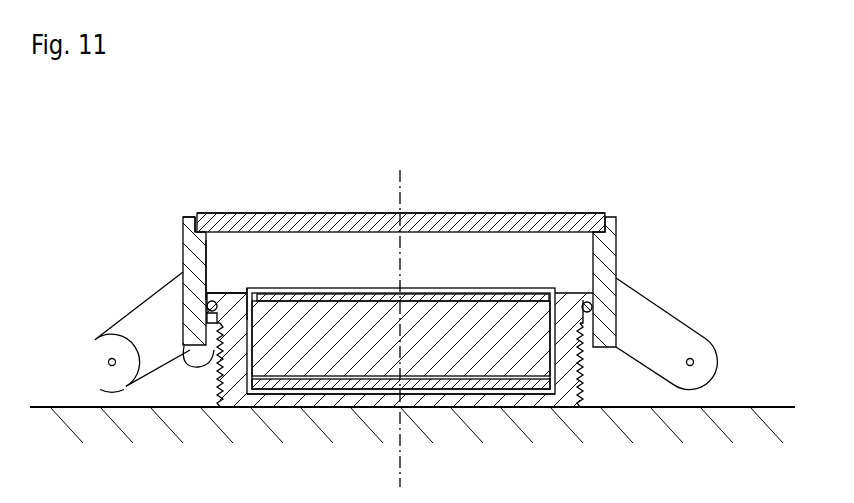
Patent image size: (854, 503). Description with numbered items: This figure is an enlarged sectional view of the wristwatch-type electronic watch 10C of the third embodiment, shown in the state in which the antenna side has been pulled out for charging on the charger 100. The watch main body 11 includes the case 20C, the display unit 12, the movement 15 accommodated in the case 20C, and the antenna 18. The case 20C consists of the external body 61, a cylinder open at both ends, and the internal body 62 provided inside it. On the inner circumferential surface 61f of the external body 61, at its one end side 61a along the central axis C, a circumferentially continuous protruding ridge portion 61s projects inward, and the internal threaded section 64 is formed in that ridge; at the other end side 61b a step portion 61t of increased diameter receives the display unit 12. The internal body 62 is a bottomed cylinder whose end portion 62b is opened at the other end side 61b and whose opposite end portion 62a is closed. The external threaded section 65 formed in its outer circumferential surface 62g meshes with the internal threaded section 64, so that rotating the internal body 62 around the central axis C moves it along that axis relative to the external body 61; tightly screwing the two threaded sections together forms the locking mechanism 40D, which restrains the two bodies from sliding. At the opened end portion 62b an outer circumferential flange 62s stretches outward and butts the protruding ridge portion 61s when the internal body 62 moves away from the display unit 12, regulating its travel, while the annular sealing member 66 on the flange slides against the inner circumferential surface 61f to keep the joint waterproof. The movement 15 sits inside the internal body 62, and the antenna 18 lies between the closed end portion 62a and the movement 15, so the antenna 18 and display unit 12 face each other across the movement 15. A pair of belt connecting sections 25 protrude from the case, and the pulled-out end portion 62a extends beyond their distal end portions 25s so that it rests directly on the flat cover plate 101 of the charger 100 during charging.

The wristwatch-type electronic watch 10C is at (594, 156).
The watch main body 11 is at (401, 171).
The display unit 12 is at (437, 214).
The movement 15 is at (347, 317).
The antenna 18 is at (429, 394).
The case 20C is at (626, 227).
The belt connecting section 25 is at (375, 376).
The distal end portion 25s is at (110, 391).
The locking mechanism 40D is at (596, 365).
The external body 61 is at (132, 247).
The one end side 61a is at (208, 318).
The other end side 61b is at (189, 216).
The inner circumferential surface 61f is at (206, 268).
The protruding ridge portion 61s is at (197, 356).
The step portion 61t is at (197, 216).
The internal body 62 is at (404, 314).
The end portion 62a is at (370, 390).
The end portion 62b is at (258, 300).
The outer circumferential surface 62g is at (205, 408).
The outer circumferential flange 62s is at (226, 292).
The internal threaded section 64 is at (401, 328).
The external threaded section 65 is at (219, 366).
The annular sealing member 66 is at (206, 307).
The charger 100 is at (746, 407).
The cover plate 101 is at (763, 407).
The central axis C is at (402, 195).